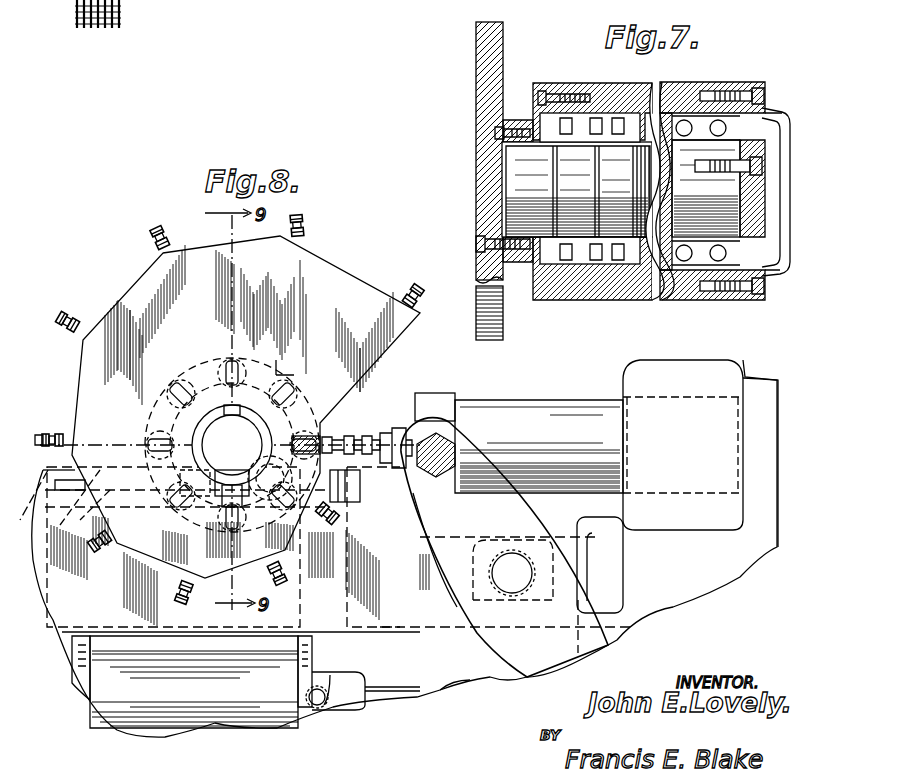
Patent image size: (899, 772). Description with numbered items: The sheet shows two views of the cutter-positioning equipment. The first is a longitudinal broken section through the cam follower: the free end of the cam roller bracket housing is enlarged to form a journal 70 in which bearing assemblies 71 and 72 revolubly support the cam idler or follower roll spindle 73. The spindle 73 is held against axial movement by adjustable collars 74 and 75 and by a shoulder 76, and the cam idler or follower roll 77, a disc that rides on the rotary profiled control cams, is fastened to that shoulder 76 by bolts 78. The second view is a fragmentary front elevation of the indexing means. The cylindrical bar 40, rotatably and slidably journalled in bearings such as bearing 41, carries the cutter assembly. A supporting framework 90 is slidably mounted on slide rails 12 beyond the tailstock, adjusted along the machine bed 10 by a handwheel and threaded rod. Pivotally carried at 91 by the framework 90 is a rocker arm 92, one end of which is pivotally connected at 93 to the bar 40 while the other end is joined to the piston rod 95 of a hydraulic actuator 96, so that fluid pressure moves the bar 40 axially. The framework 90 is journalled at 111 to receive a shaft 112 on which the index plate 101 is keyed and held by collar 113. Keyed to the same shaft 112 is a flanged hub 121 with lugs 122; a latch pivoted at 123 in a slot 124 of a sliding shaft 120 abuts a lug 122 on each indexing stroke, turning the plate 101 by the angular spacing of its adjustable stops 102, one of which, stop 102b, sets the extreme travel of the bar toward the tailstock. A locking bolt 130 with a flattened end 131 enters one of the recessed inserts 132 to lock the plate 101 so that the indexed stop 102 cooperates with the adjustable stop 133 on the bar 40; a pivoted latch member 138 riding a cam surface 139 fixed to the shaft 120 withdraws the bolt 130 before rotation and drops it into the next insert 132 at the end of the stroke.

In FIG. 7, the journal 70 is at (676, 92).
In FIG. 7, the bearing assembly 71 is at (595, 118).
In FIG. 7, the bearing assembly 72 is at (722, 118).
In FIG. 7, the cam idler or follower roll spindle 73 is at (614, 262).
In FIG. 7, the adjustable collar 74 is at (620, 118).
In FIG. 7, the adjustable collar 75 is at (772, 128).
In FIG. 7, the shoulder 76 is at (528, 122).
In FIG. 7, the cam idler or follower roll 77 is at (476, 96).
In FIG. 7, the bolt 78 is at (490, 232).
In FIG. 8, the machine bed 10 is at (486, 662).
In FIG. 8, the slide rail 12 is at (457, 630).
In FIG. 8, the cylindrical bar 40 is at (552, 414).
In FIG. 8, the bearing 41 is at (674, 370).
In FIG. 8, the supporting framework 90 is at (78, 615).
In FIG. 8, the pivot 91 is at (517, 587).
In FIG. 8, the rocker arm 92 is at (432, 496).
In FIG. 8, the pivotal connection 93 is at (438, 450).
In FIG. 8, the piston rod 95 is at (398, 694).
In FIG. 8, the hydraulic actuator 96 is at (243, 706).
In FIG. 8, the index plate 101 is at (354, 282).
In FIG. 8, the adjustable stop 102 is at (153, 234).
In FIG. 8, the stop 102b is at (352, 436).
In FIG. 8, the journal 111 is at (100, 398).
In FIG. 8, the shaft 112 is at (252, 411).
In FIG. 8, the collar 113 is at (222, 410).
In FIG. 8, the shaft 120 is at (48, 432).
In FIG. 8, the flanged hub 121 is at (145, 390).
In FIG. 8, the lug 122 is at (182, 384).
In FIG. 8, the pivot 123 is at (260, 520).
In FIG. 8, the slot 124 is at (212, 500).
In FIG. 8, the locking bolt 130 is at (358, 492).
In FIG. 8, the flattened end 131 is at (283, 384).
In FIG. 8, the recessed insert 132 is at (314, 436).
In FIG. 8, the adjustable stop 133 is at (368, 436).
In FIG. 8, the pivoted latch member 138 is at (120, 505).
In FIG. 8, the cam surface 139 is at (68, 490).